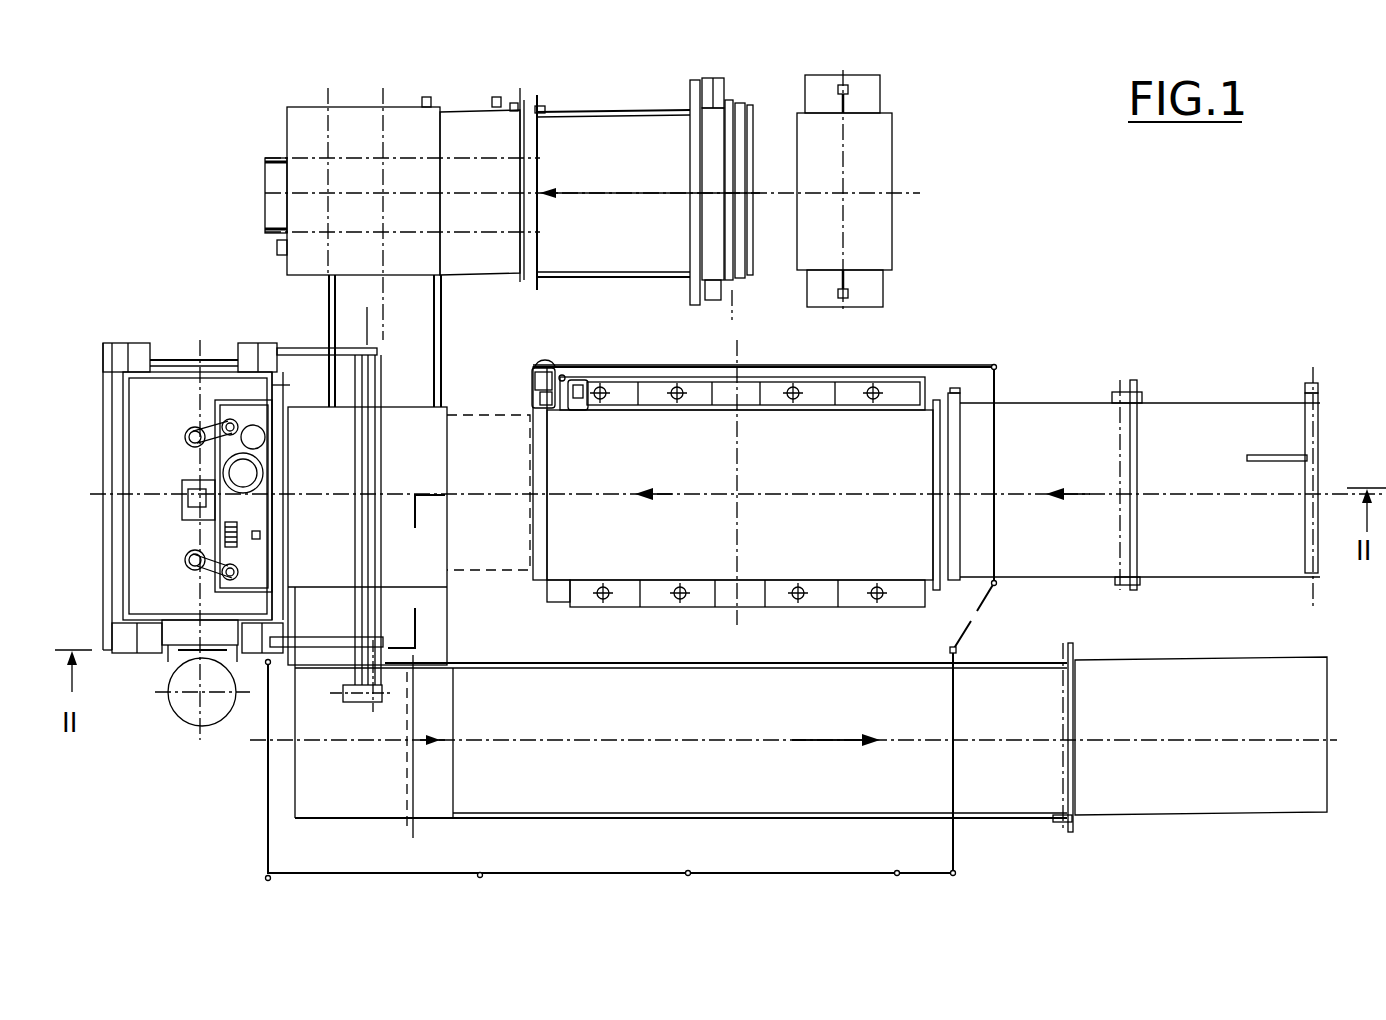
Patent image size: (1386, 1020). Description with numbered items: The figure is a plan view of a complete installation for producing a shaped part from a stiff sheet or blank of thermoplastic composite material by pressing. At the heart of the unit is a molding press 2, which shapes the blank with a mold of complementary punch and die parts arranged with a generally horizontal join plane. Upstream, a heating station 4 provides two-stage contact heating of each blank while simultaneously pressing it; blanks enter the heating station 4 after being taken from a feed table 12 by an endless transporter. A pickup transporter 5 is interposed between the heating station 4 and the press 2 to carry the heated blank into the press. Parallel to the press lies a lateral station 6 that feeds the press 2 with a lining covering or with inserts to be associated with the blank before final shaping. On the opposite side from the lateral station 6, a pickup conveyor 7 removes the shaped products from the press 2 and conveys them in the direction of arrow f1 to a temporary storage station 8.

The molding press 2 is at (178, 348).
The heating station 4 is at (892, 352).
The pickup transporter 5 is at (414, 396).
The lateral station 6 is at (524, 90).
The pickup conveyor 7 is at (676, 824).
The temporary storage station 8 is at (1333, 724).
The feed table 12 is at (1050, 395).
The arrow f1 is at (830, 740).